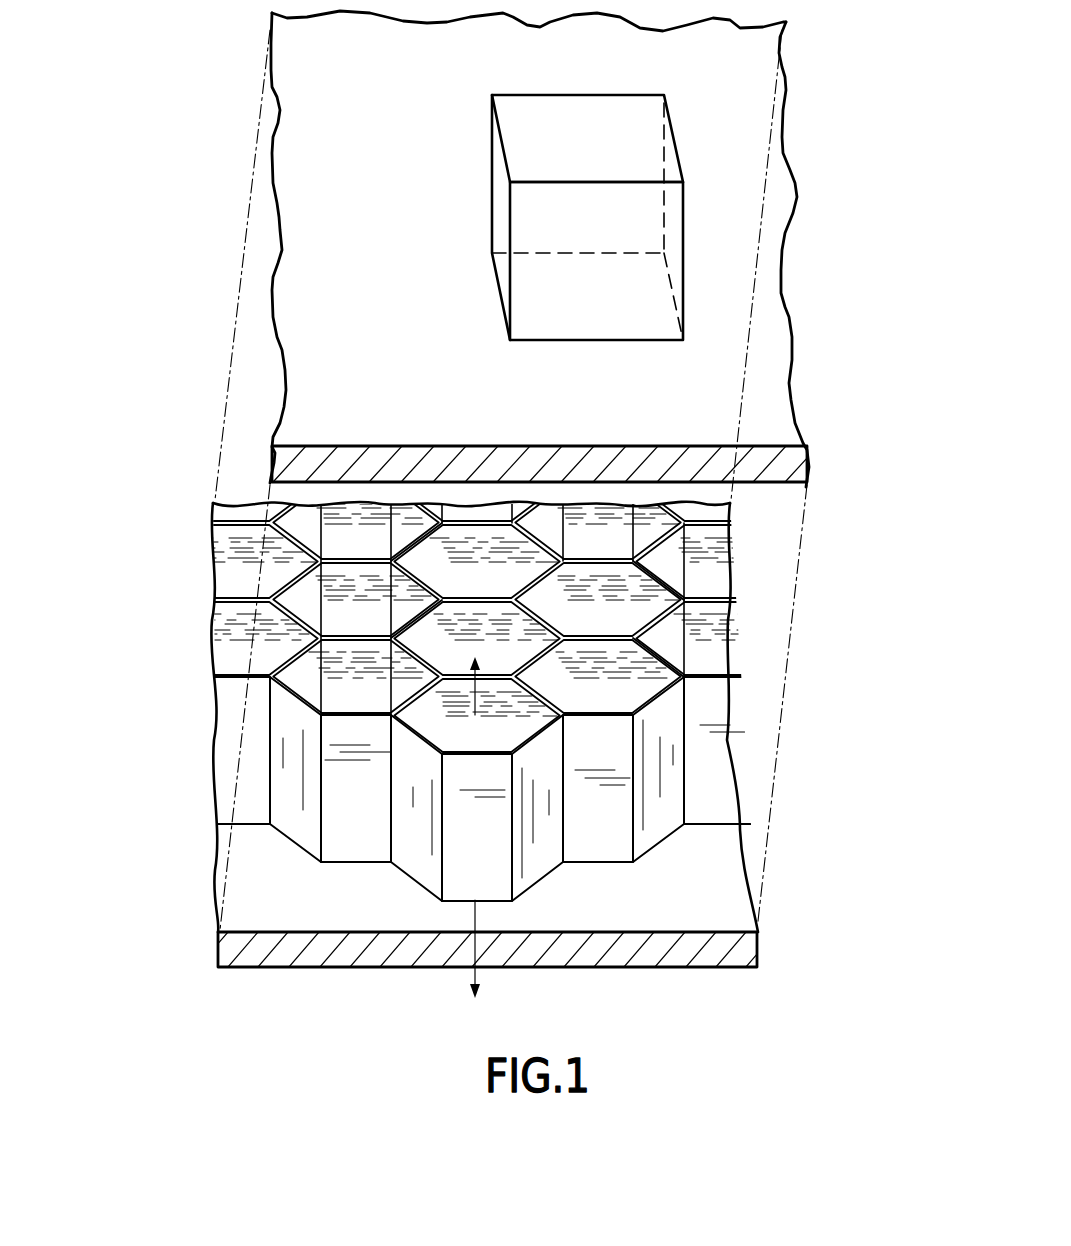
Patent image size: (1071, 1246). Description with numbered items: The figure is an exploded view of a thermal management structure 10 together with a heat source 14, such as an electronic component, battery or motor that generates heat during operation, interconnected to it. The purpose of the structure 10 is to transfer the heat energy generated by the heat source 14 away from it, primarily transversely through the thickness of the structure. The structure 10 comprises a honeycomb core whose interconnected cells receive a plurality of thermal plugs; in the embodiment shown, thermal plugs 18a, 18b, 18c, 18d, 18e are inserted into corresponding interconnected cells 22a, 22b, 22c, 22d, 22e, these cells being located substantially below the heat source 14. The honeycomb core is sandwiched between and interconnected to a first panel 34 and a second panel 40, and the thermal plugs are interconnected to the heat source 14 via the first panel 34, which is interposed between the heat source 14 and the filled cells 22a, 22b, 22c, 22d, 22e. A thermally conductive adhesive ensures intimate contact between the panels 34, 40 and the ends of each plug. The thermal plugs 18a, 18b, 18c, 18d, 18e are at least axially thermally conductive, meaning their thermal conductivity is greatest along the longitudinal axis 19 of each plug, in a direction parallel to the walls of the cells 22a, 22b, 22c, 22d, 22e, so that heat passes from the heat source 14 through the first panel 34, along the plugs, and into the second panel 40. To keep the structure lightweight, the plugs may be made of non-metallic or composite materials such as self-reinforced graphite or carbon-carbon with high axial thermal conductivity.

The thermal management structure 10 is at (866, 399).
The heat source 14 is at (681, 142).
The thermal plug 18a is at (490, 535).
The thermal plug 18b is at (440, 657).
The thermal plug 18c is at (443, 742).
The thermal plug 18d is at (622, 575).
The thermal plug 18e is at (617, 695).
The longitudinal axis 19 is at (477, 829).
The interconnected cell 22a is at (410, 531).
The interconnected cell 22b is at (408, 606).
The interconnected cell 22c is at (420, 760).
The interconnected cell 22d is at (678, 574).
The interconnected cell 22e is at (679, 654).
The first panel 34 is at (272, 219).
The second panel 40 is at (212, 951).